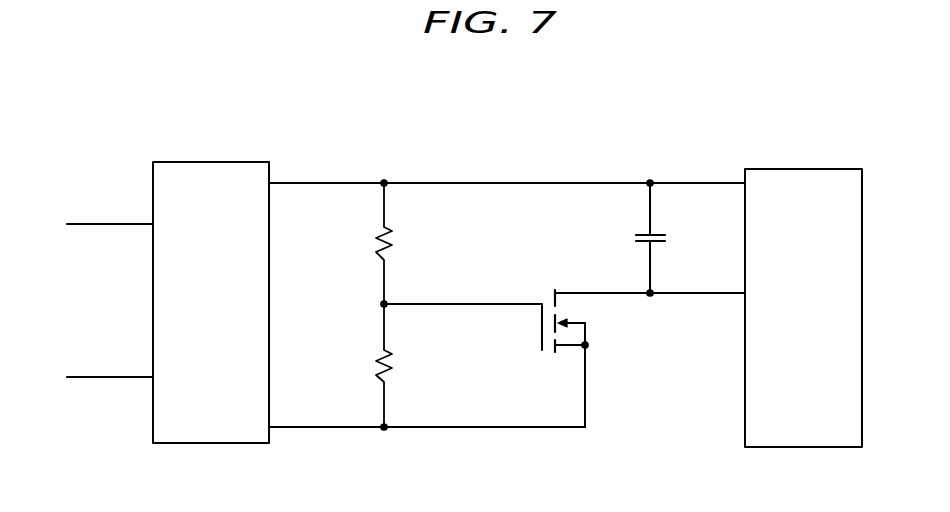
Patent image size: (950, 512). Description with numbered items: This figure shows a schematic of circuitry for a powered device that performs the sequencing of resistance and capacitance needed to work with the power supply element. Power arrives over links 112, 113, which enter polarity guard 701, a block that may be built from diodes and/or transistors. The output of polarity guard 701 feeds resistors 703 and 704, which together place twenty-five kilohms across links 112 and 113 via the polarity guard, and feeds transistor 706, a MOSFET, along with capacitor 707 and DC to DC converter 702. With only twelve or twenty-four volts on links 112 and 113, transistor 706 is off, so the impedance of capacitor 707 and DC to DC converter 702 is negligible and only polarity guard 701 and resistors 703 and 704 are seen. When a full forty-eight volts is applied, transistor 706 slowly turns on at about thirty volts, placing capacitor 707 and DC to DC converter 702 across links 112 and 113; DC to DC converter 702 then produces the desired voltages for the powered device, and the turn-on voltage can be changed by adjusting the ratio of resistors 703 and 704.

The polarity guard 701 is at (215, 161).
The DC to DC converter 702 is at (805, 168).
The link 112 is at (112, 223).
The link 113 is at (112, 376).
The resistor 703 is at (376, 243).
The resistor 704 is at (376, 367).
The transistor 706 is at (590, 338).
The capacitor 707 is at (646, 237).